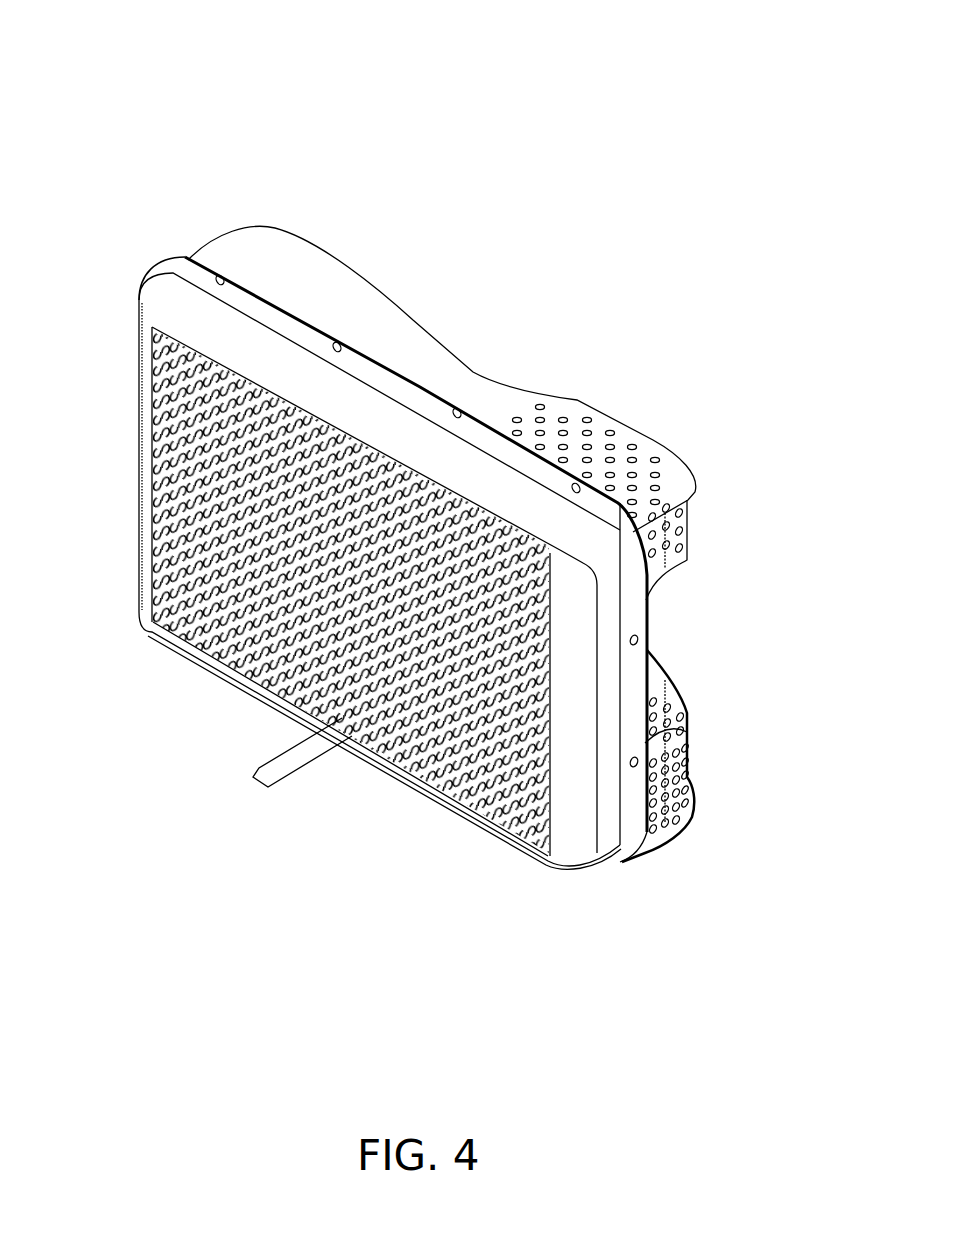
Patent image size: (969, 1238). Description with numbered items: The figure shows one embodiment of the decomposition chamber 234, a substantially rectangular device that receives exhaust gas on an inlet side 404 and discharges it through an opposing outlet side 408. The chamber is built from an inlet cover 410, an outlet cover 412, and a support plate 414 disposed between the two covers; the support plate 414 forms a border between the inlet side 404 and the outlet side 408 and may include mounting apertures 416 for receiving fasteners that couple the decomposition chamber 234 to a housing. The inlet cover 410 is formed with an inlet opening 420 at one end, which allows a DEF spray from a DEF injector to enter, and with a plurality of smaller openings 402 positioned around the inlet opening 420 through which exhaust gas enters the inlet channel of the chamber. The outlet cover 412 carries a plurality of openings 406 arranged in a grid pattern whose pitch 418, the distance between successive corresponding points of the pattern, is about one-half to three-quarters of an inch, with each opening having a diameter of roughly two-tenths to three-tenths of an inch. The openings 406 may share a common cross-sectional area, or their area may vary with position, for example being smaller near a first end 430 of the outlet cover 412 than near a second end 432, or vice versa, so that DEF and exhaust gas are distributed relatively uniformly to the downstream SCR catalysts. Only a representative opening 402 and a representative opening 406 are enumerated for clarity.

The decomposition chamber 234 is at (127, 89).
The inlet side 404 is at (720, 223).
The inlet cover 410 is at (413, 347).
The openings 402 is at (634, 446).
The inlet opening 420 is at (684, 651).
The support plate 414 is at (190, 258).
The outlet cover 412 is at (176, 318).
The mounting apertures 416 is at (226, 276).
The first end 430 is at (145, 505).
The openings 406 is at (483, 807).
The second end 432 is at (568, 838).
The outlet side 408 is at (235, 892).
The pitch 418 is at (266, 774).